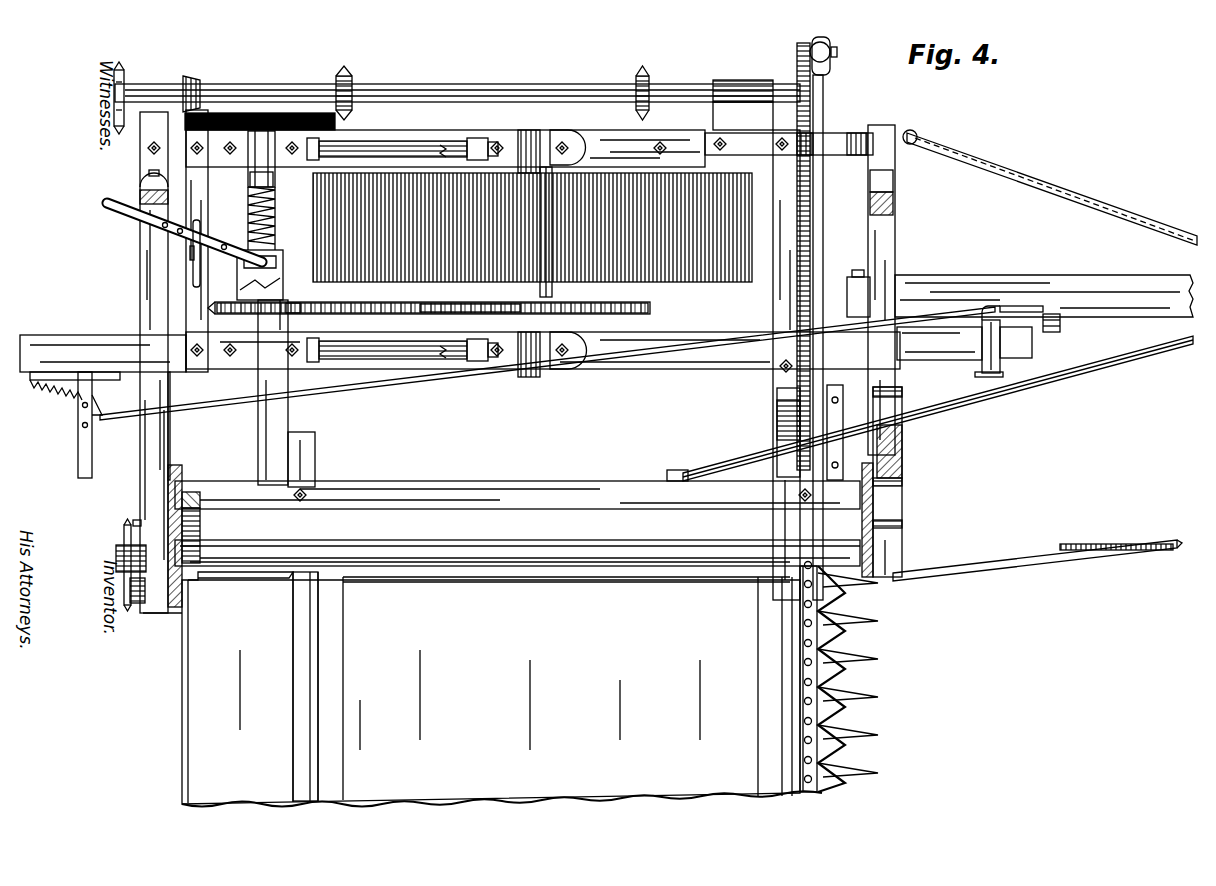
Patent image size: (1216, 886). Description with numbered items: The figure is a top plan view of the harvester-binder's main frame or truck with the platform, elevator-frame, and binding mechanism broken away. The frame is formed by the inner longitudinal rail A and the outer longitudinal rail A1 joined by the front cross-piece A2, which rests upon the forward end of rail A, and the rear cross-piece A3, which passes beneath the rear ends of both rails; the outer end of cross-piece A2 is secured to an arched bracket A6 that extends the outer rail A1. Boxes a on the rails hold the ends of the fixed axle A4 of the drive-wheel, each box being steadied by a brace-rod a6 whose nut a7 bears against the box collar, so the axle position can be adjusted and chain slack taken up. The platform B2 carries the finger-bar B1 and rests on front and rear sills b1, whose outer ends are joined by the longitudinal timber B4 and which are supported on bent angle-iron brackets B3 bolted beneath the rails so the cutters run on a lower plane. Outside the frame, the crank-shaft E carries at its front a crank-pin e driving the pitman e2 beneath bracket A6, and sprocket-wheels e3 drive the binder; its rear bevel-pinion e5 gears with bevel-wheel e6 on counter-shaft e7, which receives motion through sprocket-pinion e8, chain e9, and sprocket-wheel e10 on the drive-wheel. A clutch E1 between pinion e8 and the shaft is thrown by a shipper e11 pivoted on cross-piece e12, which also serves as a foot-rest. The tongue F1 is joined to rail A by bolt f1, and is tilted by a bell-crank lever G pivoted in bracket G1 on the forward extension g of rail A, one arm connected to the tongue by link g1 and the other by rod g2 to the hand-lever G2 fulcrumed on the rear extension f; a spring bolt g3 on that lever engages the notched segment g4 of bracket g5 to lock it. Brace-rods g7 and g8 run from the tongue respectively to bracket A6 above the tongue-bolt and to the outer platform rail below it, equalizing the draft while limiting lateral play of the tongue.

The inner longitudinal rail A is at (700, 360).
The outer longitudinal rail A1 is at (600, 138).
The front cross-piece A2 is at (885, 236).
The rear cross-piece A3 is at (148, 287).
The fixed axle A4 is at (528, 172).
The arched bracket A6 is at (838, 133).
The boxes or bearings a is at (530, 132).
The brace-rod a6 is at (400, 140).
The nut a7 is at (470, 140).
The finger-bar B1 is at (870, 625).
The platform B2 is at (502, 689).
The angle-iron bracket B3 is at (268, 440).
The outer longitudinal timber B4 is at (590, 481).
The front and rear sills b1 is at (296, 661).
The crank-shaft E is at (490, 88).
The clutch E1 is at (272, 282).
The crank-pin e is at (837, 52).
The pitman e2 is at (810, 203).
The sprocket-wheels e3 is at (352, 80).
The bevel-pinion e5 is at (200, 86).
The bevel-wheel e6 is at (265, 112).
The counter-shaft e7 is at (275, 178).
The sprocket-pinion e8 is at (292, 302).
The chain e9 is at (378, 302).
The sprocket-wheel e10 is at (470, 302).
The shipper e11 is at (120, 215).
The cross-piece e12 is at (248, 195).
The tongue F1 is at (1044, 296).
The rear extension of inner rail f is at (52, 345).
The tongue-bolt f1 is at (857, 270).
The bell-crank lever G is at (1000, 318).
The post or bracket G1 is at (939, 343).
The hand-lever G2 is at (80, 453).
The forward extension of inner rail g is at (1032, 350).
The link g1 is at (1062, 322).
The connecting rod g2 is at (645, 358).
The spring-actuated bolt g3 is at (1037, 560).
The notched segment g4 is at (55, 392).
The lever bracket g5 is at (108, 372).
The outer brace-rod g7 is at (1008, 170).
The inner brace-rod g8 is at (1078, 370).